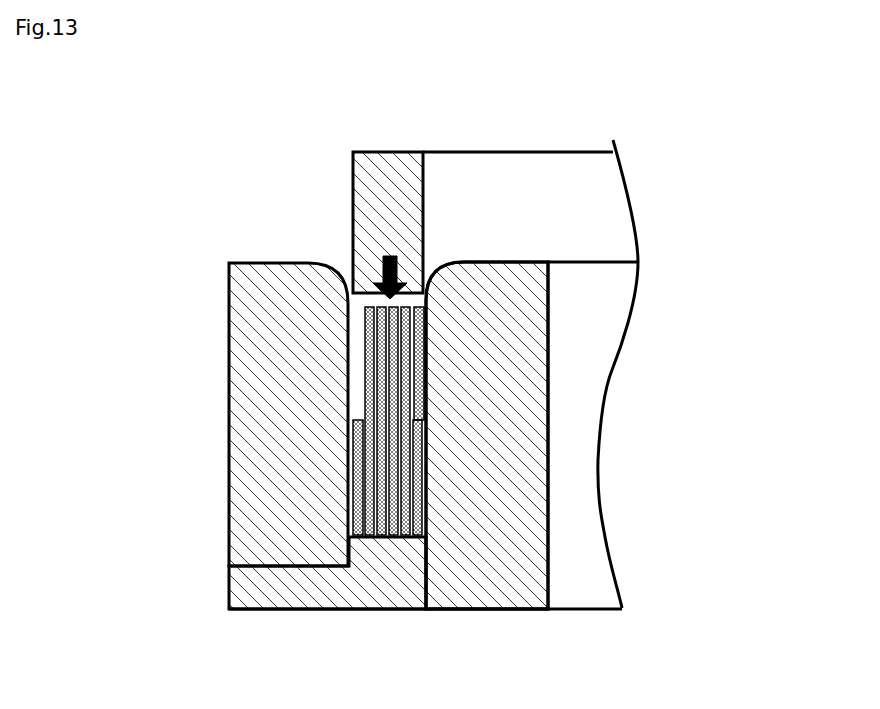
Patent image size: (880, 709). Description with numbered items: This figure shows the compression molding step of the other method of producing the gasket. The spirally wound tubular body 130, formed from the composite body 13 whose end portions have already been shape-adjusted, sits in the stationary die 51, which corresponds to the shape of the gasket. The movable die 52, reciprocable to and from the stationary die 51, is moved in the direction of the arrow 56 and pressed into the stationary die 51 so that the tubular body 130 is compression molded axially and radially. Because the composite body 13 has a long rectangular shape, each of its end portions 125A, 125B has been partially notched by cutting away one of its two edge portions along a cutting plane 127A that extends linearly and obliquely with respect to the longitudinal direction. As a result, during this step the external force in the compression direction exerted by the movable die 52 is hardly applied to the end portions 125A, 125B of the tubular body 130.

The composite body 13 is at (365, 315).
The spirally wound tubular body 130 is at (364, 403).
The end portion 125A is at (357, 440).
The end portion 125B is at (424, 412).
The cutting plane 127A is at (425, 493).
The stationary die 51 is at (479, 609).
The movable die 52 is at (469, 152).
The arrow 56 is at (390, 255).